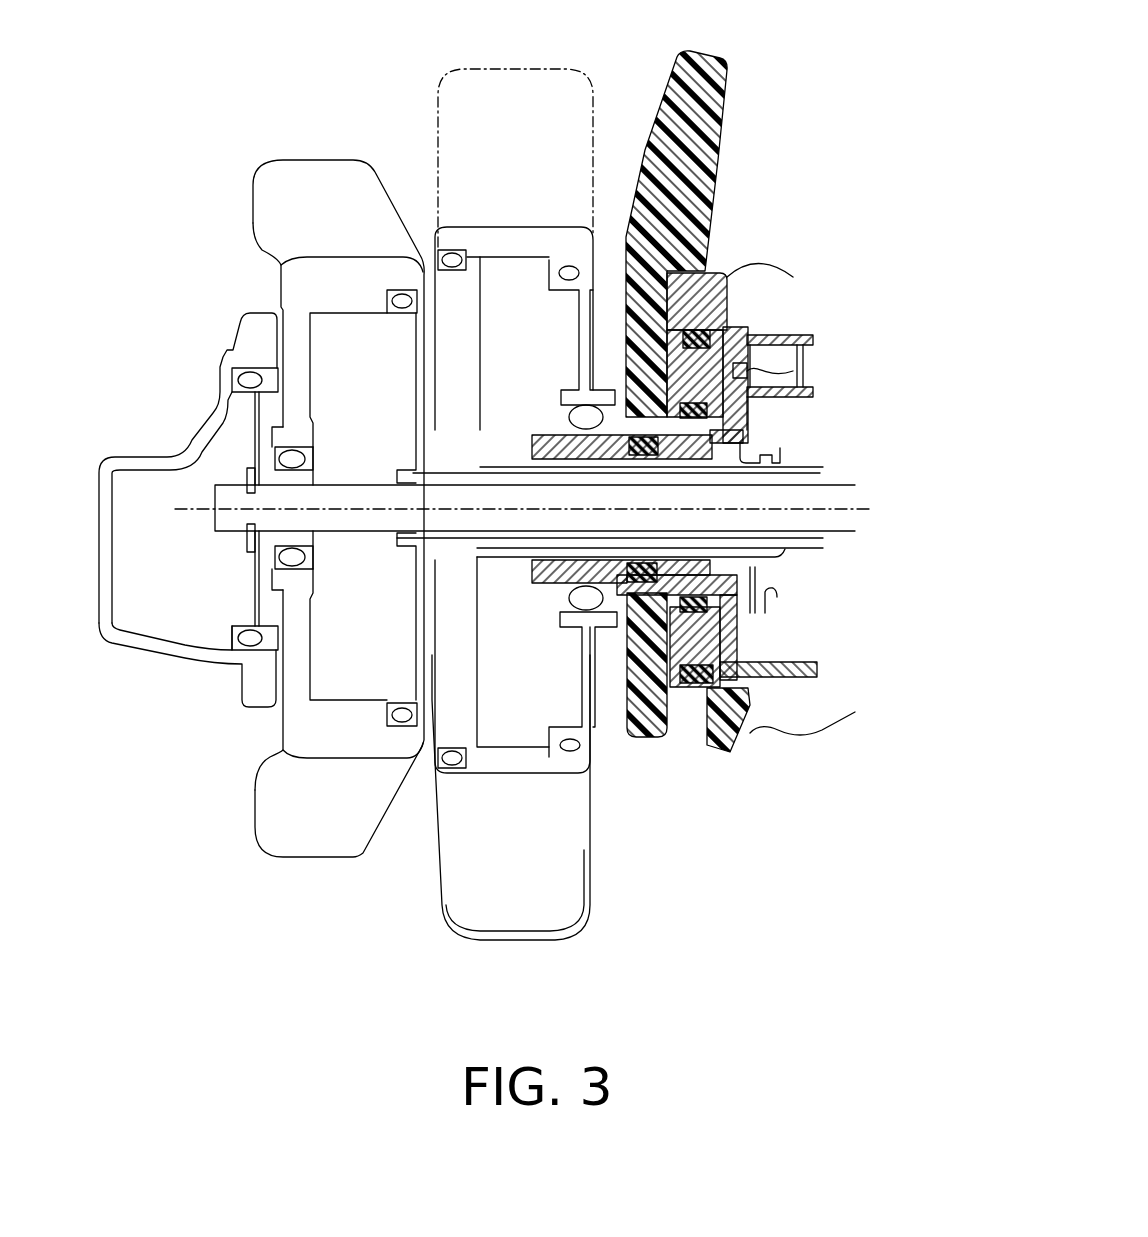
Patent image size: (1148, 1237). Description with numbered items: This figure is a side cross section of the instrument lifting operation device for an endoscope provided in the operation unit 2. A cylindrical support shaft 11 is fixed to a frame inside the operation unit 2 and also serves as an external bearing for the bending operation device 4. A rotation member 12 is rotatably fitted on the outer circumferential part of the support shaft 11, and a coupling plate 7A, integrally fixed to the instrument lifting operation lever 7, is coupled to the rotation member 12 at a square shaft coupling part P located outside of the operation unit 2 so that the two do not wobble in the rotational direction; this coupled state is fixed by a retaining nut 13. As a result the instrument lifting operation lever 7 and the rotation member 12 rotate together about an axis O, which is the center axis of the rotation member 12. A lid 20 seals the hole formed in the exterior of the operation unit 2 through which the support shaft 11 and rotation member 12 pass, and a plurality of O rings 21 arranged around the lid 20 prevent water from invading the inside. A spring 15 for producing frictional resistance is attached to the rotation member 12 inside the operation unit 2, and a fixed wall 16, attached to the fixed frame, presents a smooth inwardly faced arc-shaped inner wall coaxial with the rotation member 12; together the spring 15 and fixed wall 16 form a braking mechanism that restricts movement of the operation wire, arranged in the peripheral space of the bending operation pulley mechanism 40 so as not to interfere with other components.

The operation unit 2 is at (693, 727).
The bending operation device 4 is at (358, 132).
The instrument lifting operation lever 7 is at (712, 68).
The coupling plate 7A is at (640, 378).
The support shaft 11 is at (542, 433).
The rotation member 12 is at (742, 427).
The retaining nut 13 is at (612, 617).
The spring 15 is at (782, 358).
The fixed wall 16 is at (795, 337).
The lid 20 is at (700, 654).
The O rings 21 is at (740, 600).
The bending operation pulley mechanism 40 is at (790, 432).
The axis O is at (184, 510).
The square shaft coupling part P is at (663, 600).